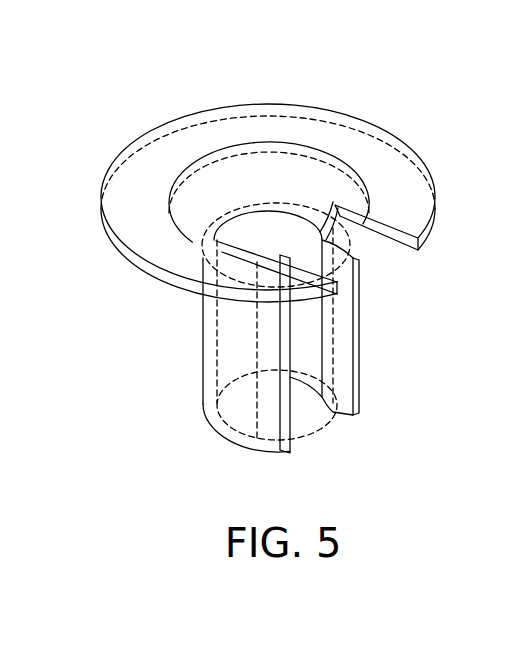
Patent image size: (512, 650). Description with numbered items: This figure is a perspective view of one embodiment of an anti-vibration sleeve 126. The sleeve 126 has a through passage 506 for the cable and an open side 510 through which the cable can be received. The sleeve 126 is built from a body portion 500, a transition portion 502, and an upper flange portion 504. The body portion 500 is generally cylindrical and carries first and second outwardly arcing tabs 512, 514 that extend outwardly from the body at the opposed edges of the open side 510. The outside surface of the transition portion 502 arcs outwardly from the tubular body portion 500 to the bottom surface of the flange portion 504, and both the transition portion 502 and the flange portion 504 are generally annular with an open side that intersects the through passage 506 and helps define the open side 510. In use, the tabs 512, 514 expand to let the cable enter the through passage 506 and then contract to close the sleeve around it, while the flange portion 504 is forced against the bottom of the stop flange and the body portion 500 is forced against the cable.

The anti-vibration sleeve 126 is at (257, 264).
The body portion 500 is at (203, 402).
The transition portion 502 is at (189, 205).
The upper flange portion 504 is at (118, 226).
The through passage 506 is at (271, 229).
The open side 510 is at (302, 417).
The first outwardly arcing tab 512 is at (290, 447).
The second outwardly arcing tab 514 is at (355, 333).